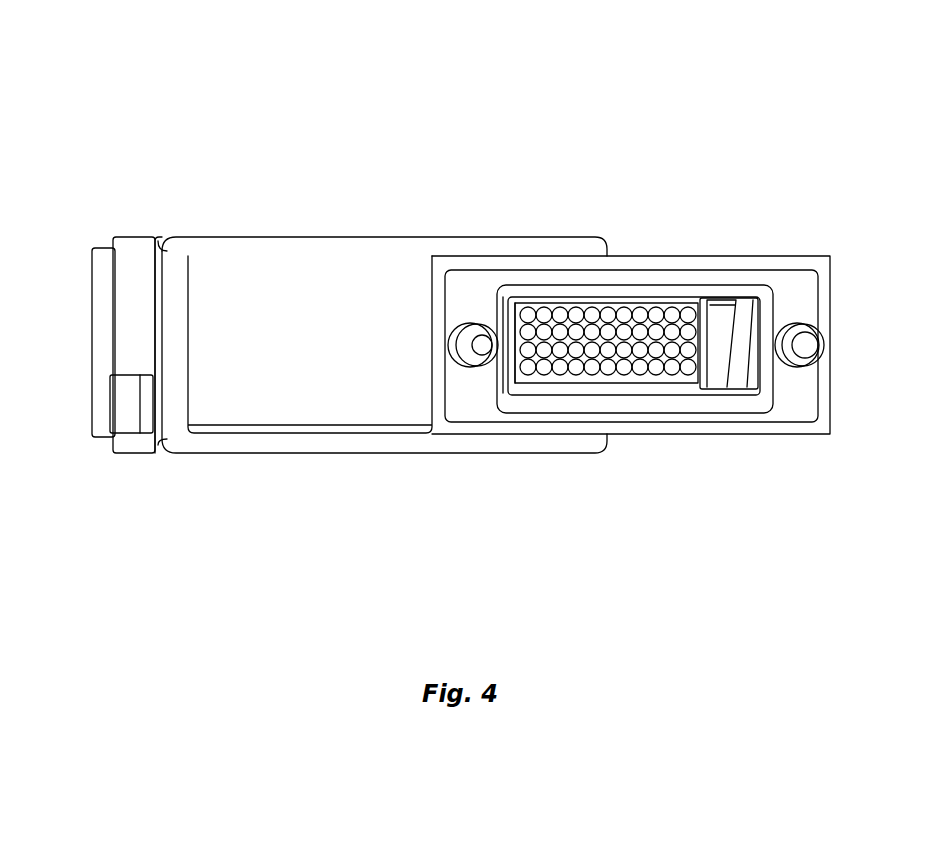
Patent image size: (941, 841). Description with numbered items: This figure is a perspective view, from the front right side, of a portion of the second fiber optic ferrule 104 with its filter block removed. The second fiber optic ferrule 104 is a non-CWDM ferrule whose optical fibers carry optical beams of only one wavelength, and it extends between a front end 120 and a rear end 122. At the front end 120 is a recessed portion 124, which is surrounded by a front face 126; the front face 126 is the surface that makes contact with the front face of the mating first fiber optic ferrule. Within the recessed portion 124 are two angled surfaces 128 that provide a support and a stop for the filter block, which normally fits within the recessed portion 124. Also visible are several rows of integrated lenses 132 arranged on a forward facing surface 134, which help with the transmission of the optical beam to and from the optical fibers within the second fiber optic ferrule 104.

The second fiber optic ferrule 104 is at (668, 143).
The front end 120 is at (428, 461).
The rear end 122 is at (93, 444).
The recessed portion 124 is at (740, 282).
The front face 126 is at (810, 297).
The angled surfaces 128 is at (736, 375).
The integrated lenses 132 is at (690, 355).
The forward facing surface 134 is at (598, 384).